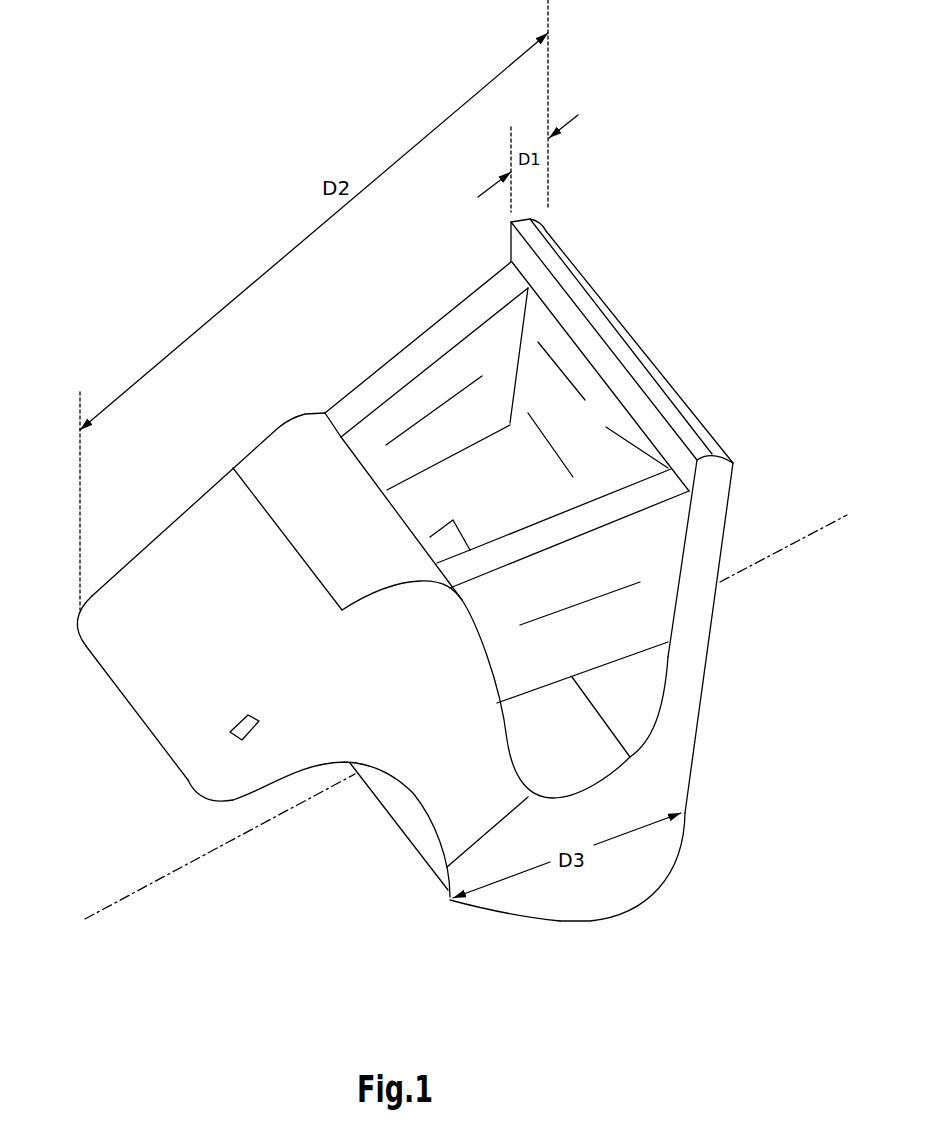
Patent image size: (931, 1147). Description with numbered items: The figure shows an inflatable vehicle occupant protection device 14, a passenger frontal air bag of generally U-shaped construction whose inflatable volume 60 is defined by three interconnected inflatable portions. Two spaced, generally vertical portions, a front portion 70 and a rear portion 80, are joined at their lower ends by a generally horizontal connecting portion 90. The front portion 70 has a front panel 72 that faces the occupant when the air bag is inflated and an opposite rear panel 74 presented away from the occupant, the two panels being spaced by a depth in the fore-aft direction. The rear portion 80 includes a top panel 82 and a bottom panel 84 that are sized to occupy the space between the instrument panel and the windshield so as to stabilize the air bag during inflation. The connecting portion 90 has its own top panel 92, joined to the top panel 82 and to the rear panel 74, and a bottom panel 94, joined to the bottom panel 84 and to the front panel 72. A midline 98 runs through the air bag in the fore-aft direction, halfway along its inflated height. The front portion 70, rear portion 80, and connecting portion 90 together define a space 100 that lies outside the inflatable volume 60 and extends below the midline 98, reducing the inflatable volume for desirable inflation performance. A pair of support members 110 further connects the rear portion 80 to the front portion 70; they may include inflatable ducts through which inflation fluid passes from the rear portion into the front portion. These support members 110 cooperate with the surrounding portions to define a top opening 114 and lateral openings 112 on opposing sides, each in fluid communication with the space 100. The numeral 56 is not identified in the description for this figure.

The inflatable vehicle occupant protection device 14 is at (338, 328).
The side wall 56 is at (85, 575).
The inflatable volume 60 is at (253, 518).
The front portion 70 is at (613, 308).
The front panel 72 is at (707, 647).
The rear panel 74 is at (617, 400).
The rear portion 80 is at (160, 533).
The top panel 82 is at (162, 697).
The bottom panel 84 is at (378, 780).
The connecting portion 90 is at (565, 921).
The top panel 92 is at (595, 763).
The bottom panel 94 is at (530, 920).
The midline 98 is at (778, 547).
The space 100 is at (513, 452).
The support members 110 is at (390, 377).
The lateral openings 112 is at (453, 483).
The top opening 114 is at (377, 424).